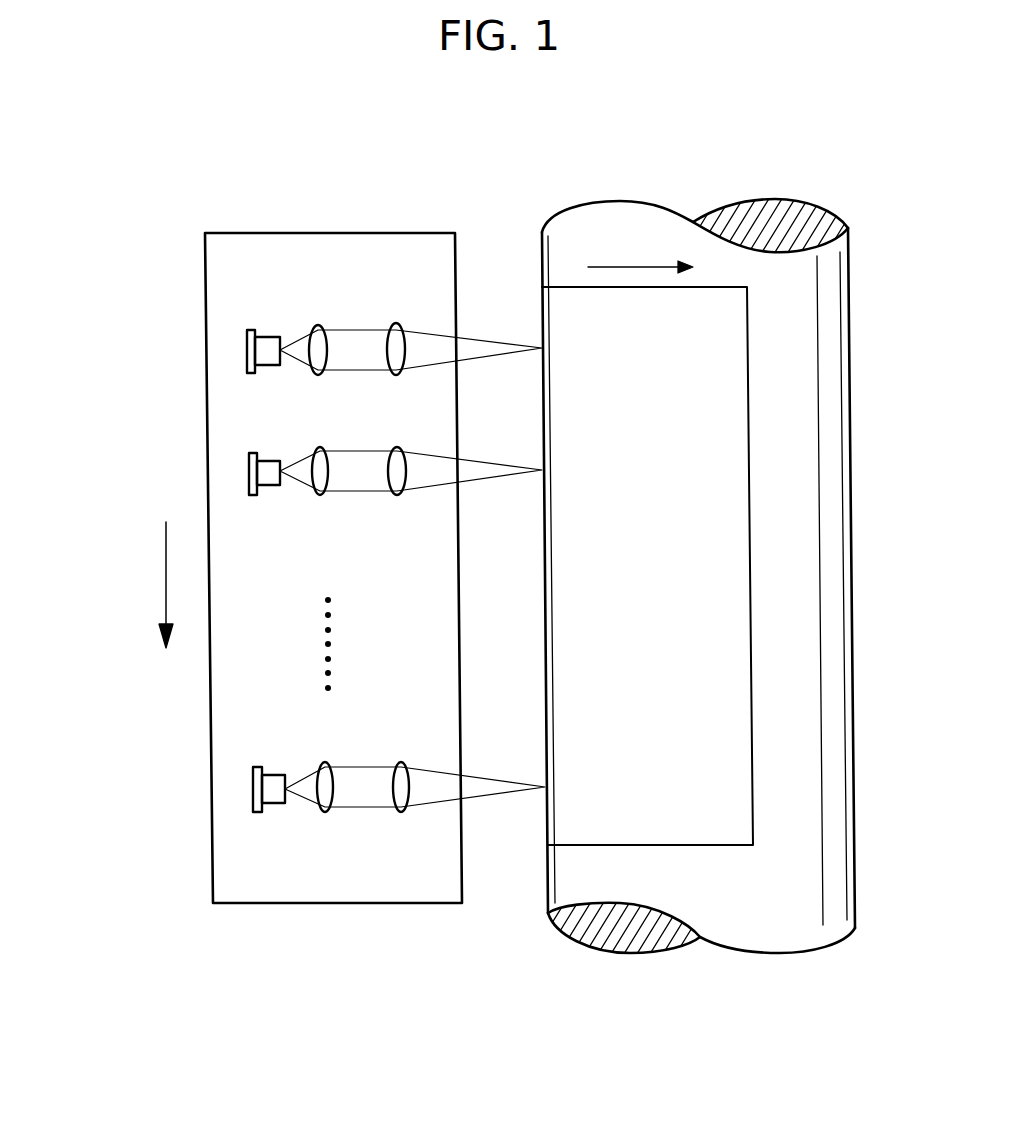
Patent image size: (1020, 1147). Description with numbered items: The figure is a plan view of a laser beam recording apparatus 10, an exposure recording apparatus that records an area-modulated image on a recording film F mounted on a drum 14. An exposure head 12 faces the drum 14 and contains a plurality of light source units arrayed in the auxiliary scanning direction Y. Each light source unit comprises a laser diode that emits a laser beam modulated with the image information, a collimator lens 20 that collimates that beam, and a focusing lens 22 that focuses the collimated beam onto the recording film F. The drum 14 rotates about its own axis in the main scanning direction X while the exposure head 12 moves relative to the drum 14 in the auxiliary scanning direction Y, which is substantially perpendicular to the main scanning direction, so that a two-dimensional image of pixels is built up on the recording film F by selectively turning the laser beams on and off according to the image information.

The laser beam recording apparatus 10 is at (483, 170).
The exposure head 12 is at (385, 233).
The drum 14 is at (795, 362).
The collimator lens 20 is at (320, 327).
The focusing lens 22 is at (394, 322).
The recording film F is at (596, 568).